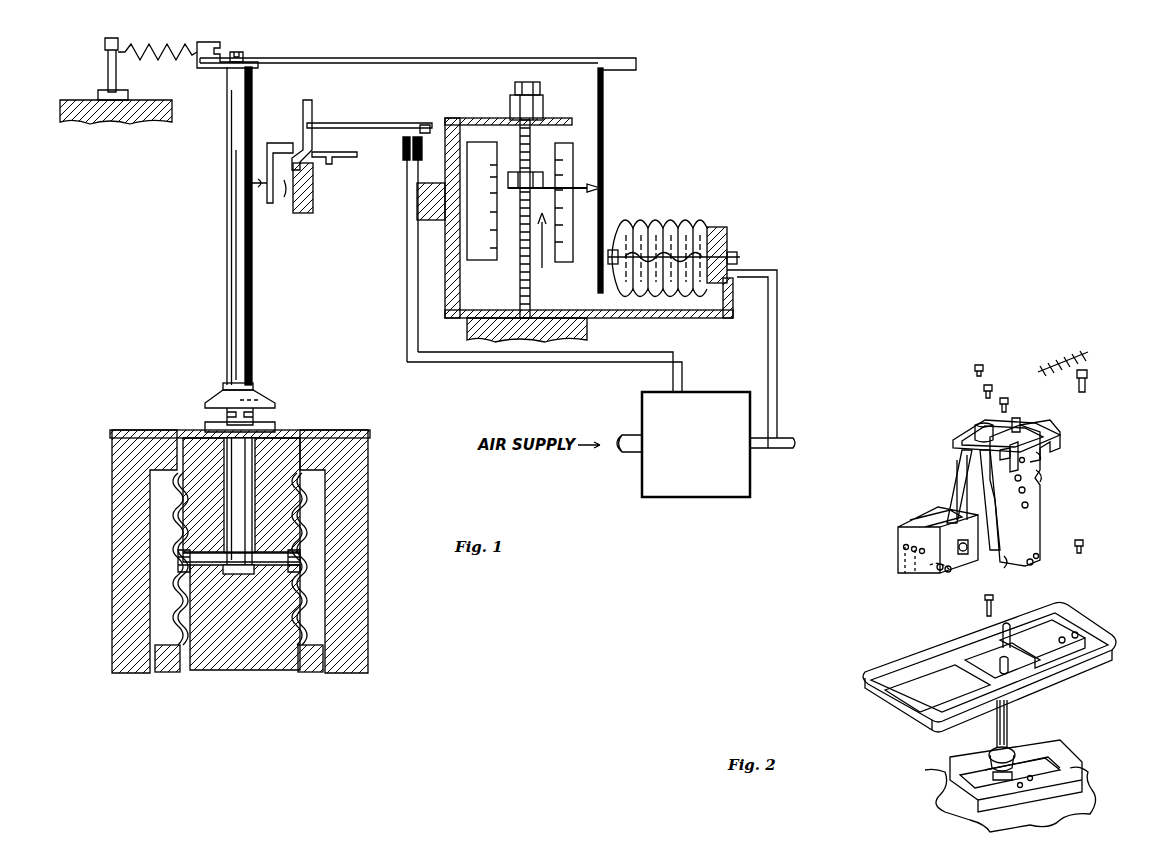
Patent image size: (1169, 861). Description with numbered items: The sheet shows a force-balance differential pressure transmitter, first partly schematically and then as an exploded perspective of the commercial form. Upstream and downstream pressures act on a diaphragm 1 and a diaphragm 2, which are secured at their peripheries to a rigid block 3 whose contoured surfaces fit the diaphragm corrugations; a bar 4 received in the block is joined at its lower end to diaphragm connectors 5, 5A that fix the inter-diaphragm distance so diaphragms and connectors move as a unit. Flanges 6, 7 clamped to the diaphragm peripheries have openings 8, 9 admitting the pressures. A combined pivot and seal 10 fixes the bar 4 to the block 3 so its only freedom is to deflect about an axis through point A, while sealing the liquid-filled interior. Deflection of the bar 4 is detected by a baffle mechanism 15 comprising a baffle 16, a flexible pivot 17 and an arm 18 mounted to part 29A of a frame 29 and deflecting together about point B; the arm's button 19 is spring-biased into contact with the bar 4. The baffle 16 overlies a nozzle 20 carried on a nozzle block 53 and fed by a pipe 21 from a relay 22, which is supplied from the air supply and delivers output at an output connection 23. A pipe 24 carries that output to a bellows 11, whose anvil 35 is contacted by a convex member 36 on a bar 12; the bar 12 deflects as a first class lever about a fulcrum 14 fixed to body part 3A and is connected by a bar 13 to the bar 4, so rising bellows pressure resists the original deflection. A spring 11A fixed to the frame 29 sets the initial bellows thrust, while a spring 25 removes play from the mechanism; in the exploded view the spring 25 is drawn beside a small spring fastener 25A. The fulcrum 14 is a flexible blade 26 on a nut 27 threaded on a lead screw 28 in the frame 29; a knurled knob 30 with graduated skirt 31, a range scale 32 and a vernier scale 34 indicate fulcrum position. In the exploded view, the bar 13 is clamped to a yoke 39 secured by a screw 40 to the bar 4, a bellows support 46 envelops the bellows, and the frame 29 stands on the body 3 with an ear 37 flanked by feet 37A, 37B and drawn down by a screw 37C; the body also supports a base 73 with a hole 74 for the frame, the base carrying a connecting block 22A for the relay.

In FIG. 1, the diaphragm 1 is at (170, 508).
In FIG. 1, the diaphragm 2 is at (300, 514).
In FIG. 1, the rigid block 3 is at (300, 430).
In FIG. 2, the rigid block 3 is at (928, 754).
In FIG. 1, the body part 3A is at (590, 336).
In FIG. 2, the body part 3A is at (1045, 762).
In FIG. 1, the bar 4 is at (220, 298).
In FIG. 2, the bar 4 is at (1008, 732).
In FIG. 1, the diaphragm connector 5 is at (185, 572).
In FIG. 1, the diaphragm connector 5A is at (300, 572).
In FIG. 1, the flange 6 is at (112, 590).
In FIG. 2, the flange 6 is at (930, 777).
In FIG. 1, the flange 7 is at (368, 640).
In FIG. 2, the flange 7 is at (1088, 796).
In FIG. 1, the opening 8 is at (158, 673).
In FIG. 1, the opening 9 is at (315, 673).
In FIG. 1, the combined pivot and seal 10 is at (281, 389).
In FIG. 2, the combined pivot and seal 10 is at (1015, 756).
In FIG. 1, the bellows 11 is at (672, 220).
In FIG. 1, the spring 11A is at (700, 228).
In FIG. 1, the bar 12 is at (604, 165).
In FIG. 2, the bar 12 is at (950, 465).
In FIG. 1, the bar 13 is at (452, 60).
In FIG. 2, the bar 13 is at (965, 435).
In FIG. 1, the fulcrum 14 is at (542, 268).
In FIG. 1, the baffle mechanism 15 is at (297, 110).
In FIG. 1, the baffle 16 is at (430, 123).
In FIG. 1, the flexible pivot 17 is at (300, 165).
In FIG. 1, the arm 18 is at (282, 180).
In FIG. 1, the button 19 is at (264, 188).
In FIG. 1, the nozzle 20 is at (405, 158).
In FIG. 1, the pipe 21 is at (517, 363).
In FIG. 2, the pipe 21 is at (1048, 471).
In FIG. 1, the relay 22 is at (706, 454).
In FIG. 2, the connecting block 22A is at (1080, 615).
In FIG. 1, the output connection 23 is at (775, 450).
In FIG. 1, the pipe 24 is at (778, 390).
In FIG. 2, the pipe 24 is at (950, 572).
In FIG. 1, the spring 25 is at (158, 42).
In FIG. 2, the spring 25 is at (1046, 360).
In FIG. 2, the spring screw 25A is at (1090, 380).
In FIG. 1, the flexible blade 26 is at (600, 192).
In FIG. 1, the nut 27 is at (535, 172).
In FIG. 1, the lead screw 28 is at (532, 275).
In FIG. 2, the frame 29 is at (1060, 433).
In FIG. 1, the frame part 29A is at (308, 213).
In FIG. 1, the knurled knob 30 is at (512, 98).
In FIG. 1, the graduated skirt 31 is at (543, 106).
In FIG. 1, the scale 32 is at (483, 142).
In FIG. 1, the scale 34 is at (573, 148).
In FIG. 1, the anvil 35 is at (615, 250).
In FIG. 1, the convex member 36 is at (598, 290).
In FIG. 2, the ear 37 is at (1034, 566).
In FIG. 2, the foot 37A is at (1040, 557).
In FIG. 2, the foot 37B is at (1004, 568).
In FIG. 2, the screw 37C is at (1084, 542).
In FIG. 1, the yoke 39 is at (200, 72).
In FIG. 2, the yoke 39 is at (1018, 418).
In FIG. 2, the screw 40 is at (1004, 398).
In FIG. 2, the bellows support 46 is at (898, 548).
In FIG. 2, the nozzle block 53 is at (1048, 456).
In FIG. 2, the base 73 is at (884, 651).
In FIG. 2, the hole 74 is at (985, 642).
In FIG. 1, the point A is at (228, 415).
In FIG. 1, the point B is at (283, 193).